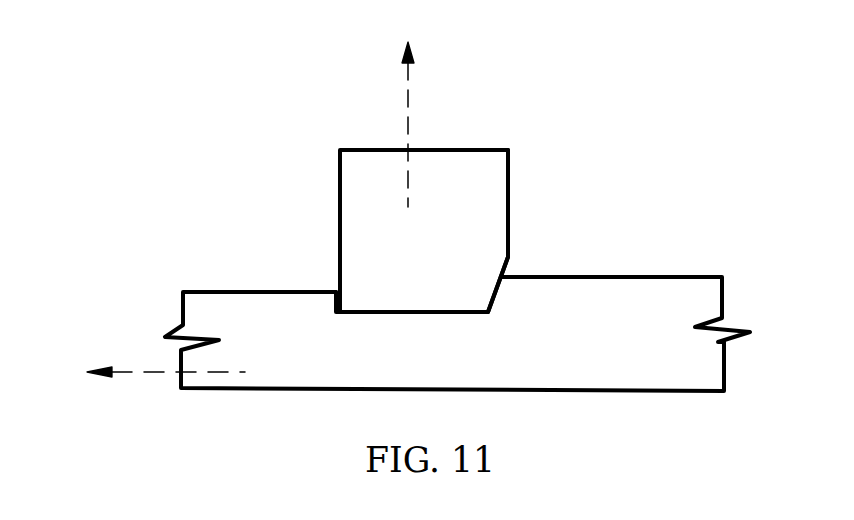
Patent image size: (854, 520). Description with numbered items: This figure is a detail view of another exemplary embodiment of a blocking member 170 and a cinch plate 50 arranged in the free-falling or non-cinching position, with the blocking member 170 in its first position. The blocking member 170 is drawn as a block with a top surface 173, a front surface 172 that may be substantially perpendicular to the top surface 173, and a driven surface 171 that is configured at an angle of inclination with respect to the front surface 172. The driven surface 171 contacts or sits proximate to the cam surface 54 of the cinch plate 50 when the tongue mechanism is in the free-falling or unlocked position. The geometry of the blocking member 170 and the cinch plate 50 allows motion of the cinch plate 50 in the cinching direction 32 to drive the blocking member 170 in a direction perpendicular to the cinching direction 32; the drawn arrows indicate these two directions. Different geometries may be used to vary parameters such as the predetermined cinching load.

The cinching direction 32 is at (150, 371).
The cinch plate 50 is at (670, 293).
The cam surface 54 is at (512, 292).
The blocking member 170 is at (337, 180).
The driven surface 171 is at (512, 292).
The front surface 172 is at (511, 156).
The top surface 173 is at (428, 150).